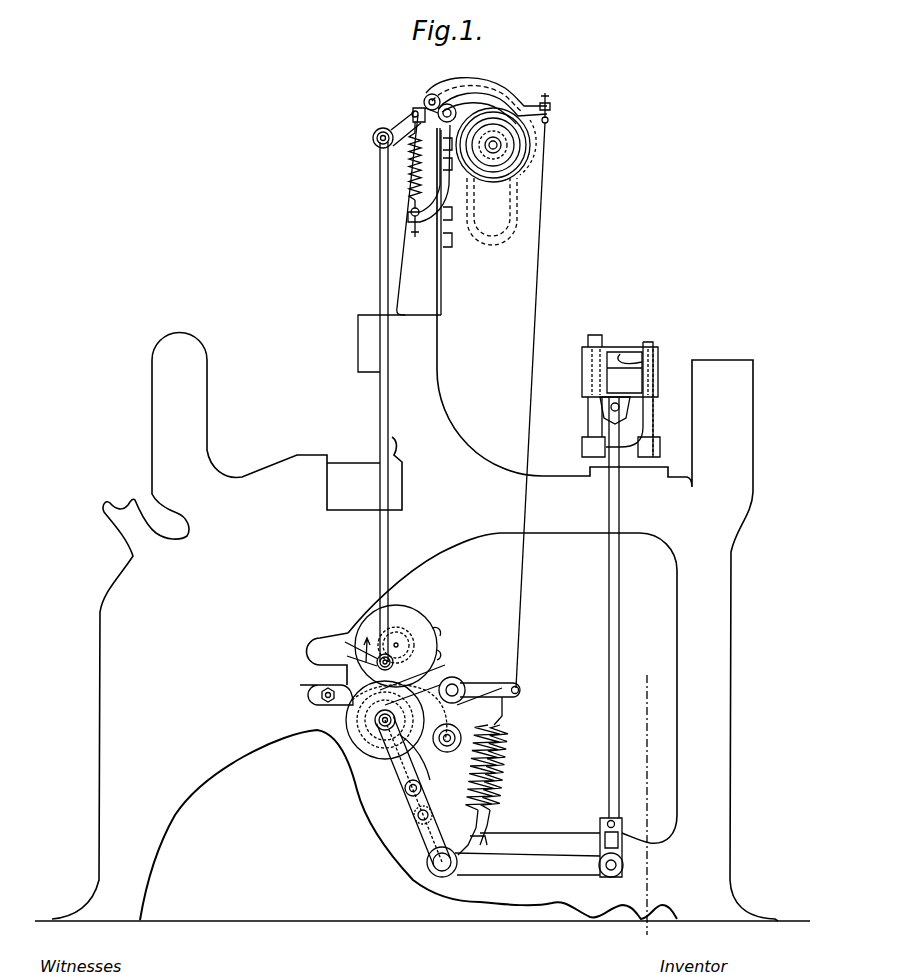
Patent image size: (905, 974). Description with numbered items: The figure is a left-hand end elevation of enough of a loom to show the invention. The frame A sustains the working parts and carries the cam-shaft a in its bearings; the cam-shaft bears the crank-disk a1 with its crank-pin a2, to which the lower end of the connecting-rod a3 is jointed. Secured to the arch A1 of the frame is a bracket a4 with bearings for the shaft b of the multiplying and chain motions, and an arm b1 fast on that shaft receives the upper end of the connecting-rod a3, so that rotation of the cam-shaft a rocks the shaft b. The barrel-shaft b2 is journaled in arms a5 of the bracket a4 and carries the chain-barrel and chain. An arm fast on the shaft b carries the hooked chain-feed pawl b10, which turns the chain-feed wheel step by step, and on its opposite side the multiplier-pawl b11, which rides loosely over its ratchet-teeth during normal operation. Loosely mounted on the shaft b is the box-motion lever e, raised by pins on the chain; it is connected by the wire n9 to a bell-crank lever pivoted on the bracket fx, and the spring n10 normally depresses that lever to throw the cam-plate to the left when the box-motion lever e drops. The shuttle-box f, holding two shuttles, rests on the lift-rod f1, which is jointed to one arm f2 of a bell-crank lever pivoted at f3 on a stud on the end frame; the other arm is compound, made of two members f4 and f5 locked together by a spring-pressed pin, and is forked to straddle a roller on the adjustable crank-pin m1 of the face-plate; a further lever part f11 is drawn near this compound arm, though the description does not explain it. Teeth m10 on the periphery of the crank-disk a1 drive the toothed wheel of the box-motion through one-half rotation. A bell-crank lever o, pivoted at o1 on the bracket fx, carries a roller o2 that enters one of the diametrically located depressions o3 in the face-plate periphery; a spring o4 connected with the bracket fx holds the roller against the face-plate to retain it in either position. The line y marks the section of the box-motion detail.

The frame A is at (422, 524).
The arch A1 is at (432, 293).
The cam-shaft a is at (410, 637).
The crank-disk a1 is at (400, 612).
The crank-pin a2 is at (377, 662).
The connecting-rod a3 is at (389, 432).
The bracket a4 is at (443, 203).
The arms of the bracket a5 is at (520, 168).
The shaft b is at (424, 104).
The arm b1 is at (403, 128).
The barrel-shaft b2 is at (497, 145).
The chain-feed pawl b10 is at (500, 98).
The multiplier-pawl b11 is at (470, 82).
The box-motion lever e is at (549, 104).
The shuttle-box f is at (582, 347).
The lift-rod f1 is at (605, 648).
The arm of bell-crank lever f2 is at (540, 858).
The pivot of bell-crank lever f3 is at (440, 864).
The member of compound arm f4 is at (425, 830).
The member of compound arm f5 is at (402, 772).
The lever arm f11 is at (390, 740).
The bracket fx is at (504, 776).
The crank-pin m1 is at (375, 718).
The teeth m10 is at (438, 680).
The wire n9 is at (516, 405).
The spring n10 is at (500, 732).
The bell-crank lever o is at (488, 688).
The pivot o1 is at (457, 686).
The roller o2 is at (445, 752).
The depressions o3 is at (325, 690).
The spring o4 is at (490, 808).
The section line y is at (645, 803).